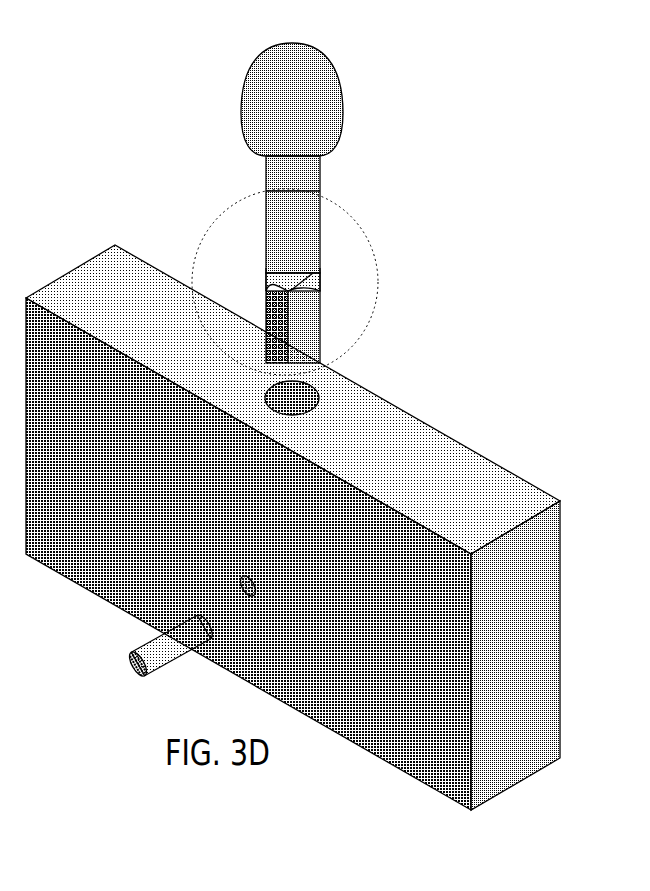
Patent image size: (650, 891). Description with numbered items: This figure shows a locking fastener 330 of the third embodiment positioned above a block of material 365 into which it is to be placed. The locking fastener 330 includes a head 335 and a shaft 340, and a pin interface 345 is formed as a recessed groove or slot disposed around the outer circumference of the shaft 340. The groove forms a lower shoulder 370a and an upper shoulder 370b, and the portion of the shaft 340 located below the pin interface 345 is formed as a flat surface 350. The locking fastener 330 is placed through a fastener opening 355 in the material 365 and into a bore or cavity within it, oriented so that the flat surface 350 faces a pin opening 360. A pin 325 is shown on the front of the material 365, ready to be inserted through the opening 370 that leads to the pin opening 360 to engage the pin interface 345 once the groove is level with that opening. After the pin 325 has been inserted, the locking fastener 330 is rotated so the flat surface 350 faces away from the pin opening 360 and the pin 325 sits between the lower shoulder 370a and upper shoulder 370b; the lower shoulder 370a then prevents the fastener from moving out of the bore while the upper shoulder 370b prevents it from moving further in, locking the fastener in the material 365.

The pin 325 is at (143, 663).
The locking fastener 330 is at (314, 186).
The head 335 is at (305, 43).
The shaft 340 is at (308, 173).
The pin interface 345 is at (305, 265).
The flat surface 350 is at (258, 307).
The fastener opening 355 is at (372, 284).
The pin opening 360 is at (316, 384).
The material 365 is at (433, 428).
The front hole 370 is at (233, 590).
The lower shoulder 370a is at (308, 272).
The upper shoulder 370b is at (258, 258).